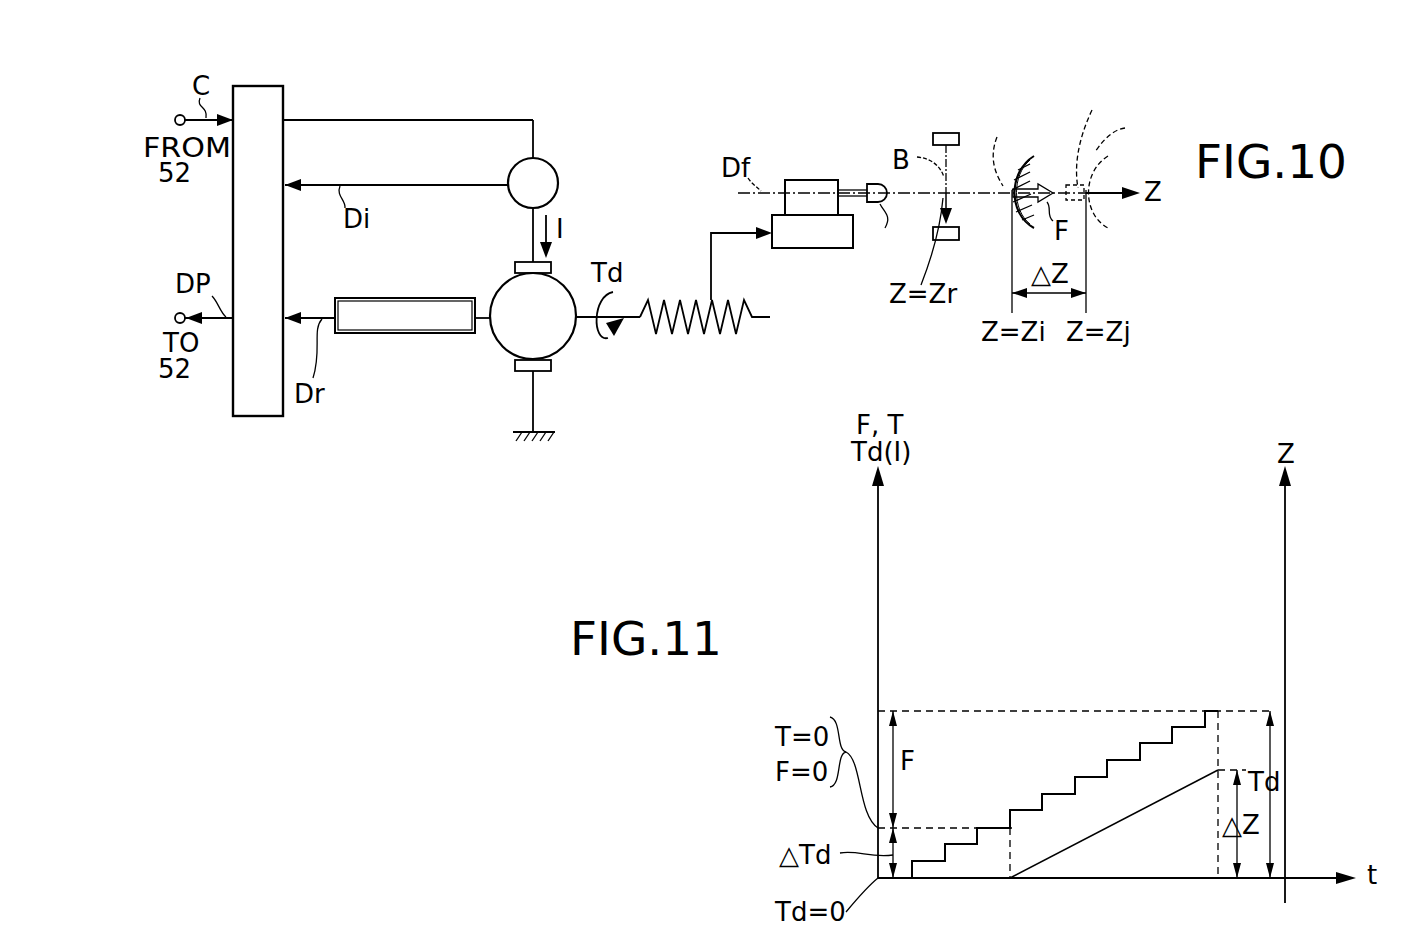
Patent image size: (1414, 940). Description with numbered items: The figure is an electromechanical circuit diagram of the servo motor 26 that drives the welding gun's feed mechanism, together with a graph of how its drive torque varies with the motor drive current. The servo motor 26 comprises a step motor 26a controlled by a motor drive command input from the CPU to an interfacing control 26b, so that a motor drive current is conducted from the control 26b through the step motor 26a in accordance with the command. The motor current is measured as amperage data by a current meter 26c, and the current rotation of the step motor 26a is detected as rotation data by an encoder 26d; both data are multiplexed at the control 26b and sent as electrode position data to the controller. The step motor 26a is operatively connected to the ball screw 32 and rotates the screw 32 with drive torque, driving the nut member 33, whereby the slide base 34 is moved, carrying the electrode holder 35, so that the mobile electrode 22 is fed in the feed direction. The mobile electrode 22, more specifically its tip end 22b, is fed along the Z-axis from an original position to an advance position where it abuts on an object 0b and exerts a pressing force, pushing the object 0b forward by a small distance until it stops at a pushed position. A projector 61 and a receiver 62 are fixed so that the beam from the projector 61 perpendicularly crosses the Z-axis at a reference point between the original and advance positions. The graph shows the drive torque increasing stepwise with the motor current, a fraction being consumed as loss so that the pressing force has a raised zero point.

The servo motor 26 is at (560, 351).
The step motor 26a is at (499, 350).
The interfacing control 26b is at (257, 418).
The current meter 26c is at (545, 161).
The encoder 26d is at (357, 334).
The ball screw 32 is at (697, 333).
The nut member 33 is at (711, 266).
The slide base 34 is at (805, 249).
The electrode holder 35 is at (805, 180).
The mobile electrode 22 is at (962, 170).
The tip end of the mobile electrode 22b is at (878, 182).
The projector 61 is at (938, 133).
The receiver 62 is at (946, 241).
The object 0b is at (1031, 158).